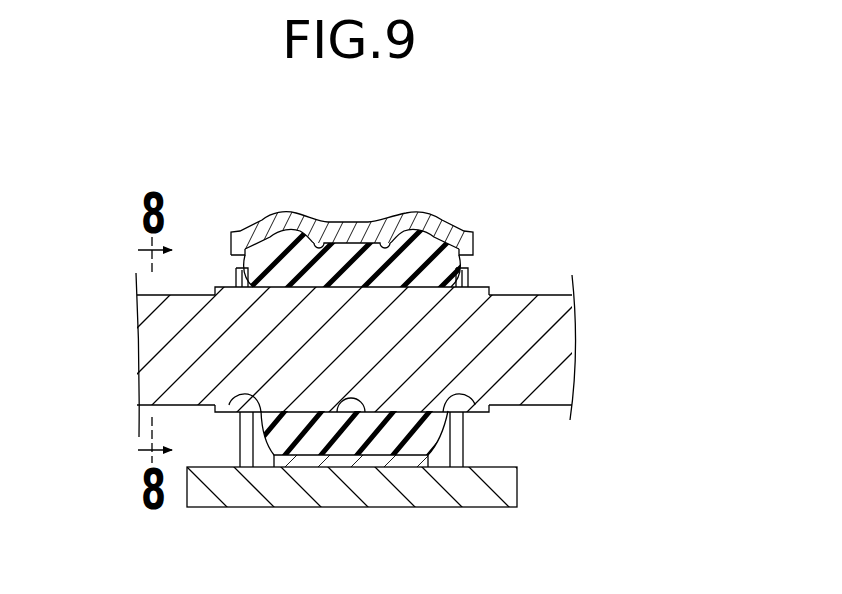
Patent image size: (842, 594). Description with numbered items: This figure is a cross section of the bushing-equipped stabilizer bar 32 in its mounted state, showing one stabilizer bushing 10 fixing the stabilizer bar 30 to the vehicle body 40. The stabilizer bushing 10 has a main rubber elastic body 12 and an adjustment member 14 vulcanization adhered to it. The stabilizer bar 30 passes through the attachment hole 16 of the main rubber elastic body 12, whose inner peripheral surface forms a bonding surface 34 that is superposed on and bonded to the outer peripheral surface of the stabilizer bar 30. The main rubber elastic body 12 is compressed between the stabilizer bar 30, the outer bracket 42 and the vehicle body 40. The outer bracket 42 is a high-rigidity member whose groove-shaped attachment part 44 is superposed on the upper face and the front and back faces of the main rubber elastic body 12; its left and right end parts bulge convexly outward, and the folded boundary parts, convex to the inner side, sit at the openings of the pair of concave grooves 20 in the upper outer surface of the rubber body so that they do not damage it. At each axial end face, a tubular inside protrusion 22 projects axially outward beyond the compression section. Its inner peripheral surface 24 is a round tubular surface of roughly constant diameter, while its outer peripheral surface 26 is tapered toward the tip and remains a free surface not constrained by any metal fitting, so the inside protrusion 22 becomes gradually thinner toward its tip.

The stabilizer bushing 10 is at (355, 223).
The main rubber elastic body 12 is at (443, 236).
The adjustment member 14 is at (394, 472).
The attachment hole 16 is at (362, 477).
The concave grooves 20 is at (319, 243).
The inside protrusions 22 is at (254, 432).
The inner peripheral surface 24 is at (229, 405).
The outer peripheral surface 26 is at (240, 267).
The stabilizer bar 30 is at (566, 318).
The bushing-equipped stabilizer bar 32 is at (559, 245).
The bonding surface 34 is at (418, 294).
The vehicle body 40 is at (265, 488).
The outer bracket 42 is at (254, 213).
The attachment part 44 is at (289, 231).